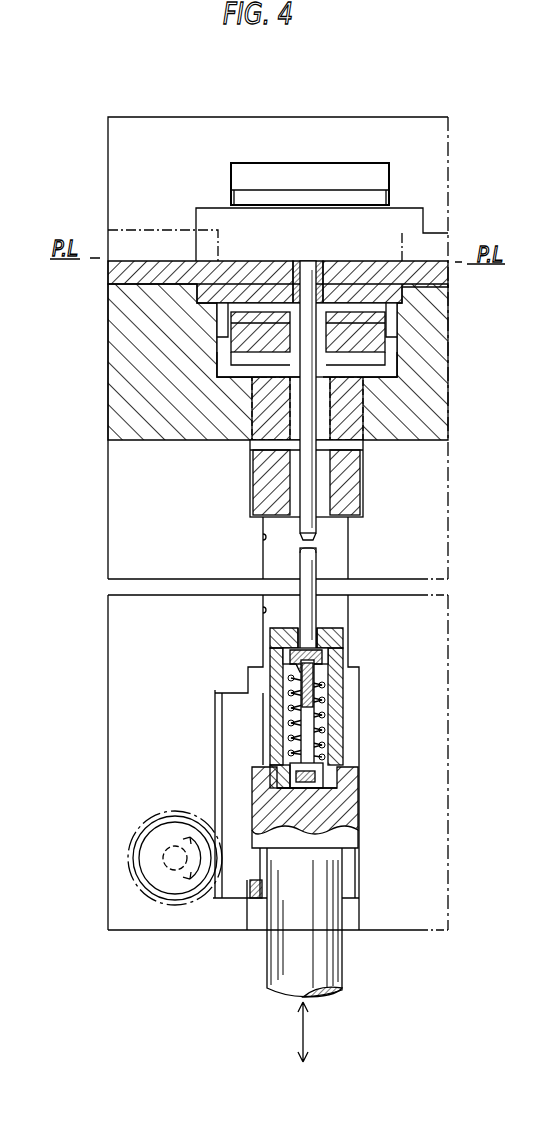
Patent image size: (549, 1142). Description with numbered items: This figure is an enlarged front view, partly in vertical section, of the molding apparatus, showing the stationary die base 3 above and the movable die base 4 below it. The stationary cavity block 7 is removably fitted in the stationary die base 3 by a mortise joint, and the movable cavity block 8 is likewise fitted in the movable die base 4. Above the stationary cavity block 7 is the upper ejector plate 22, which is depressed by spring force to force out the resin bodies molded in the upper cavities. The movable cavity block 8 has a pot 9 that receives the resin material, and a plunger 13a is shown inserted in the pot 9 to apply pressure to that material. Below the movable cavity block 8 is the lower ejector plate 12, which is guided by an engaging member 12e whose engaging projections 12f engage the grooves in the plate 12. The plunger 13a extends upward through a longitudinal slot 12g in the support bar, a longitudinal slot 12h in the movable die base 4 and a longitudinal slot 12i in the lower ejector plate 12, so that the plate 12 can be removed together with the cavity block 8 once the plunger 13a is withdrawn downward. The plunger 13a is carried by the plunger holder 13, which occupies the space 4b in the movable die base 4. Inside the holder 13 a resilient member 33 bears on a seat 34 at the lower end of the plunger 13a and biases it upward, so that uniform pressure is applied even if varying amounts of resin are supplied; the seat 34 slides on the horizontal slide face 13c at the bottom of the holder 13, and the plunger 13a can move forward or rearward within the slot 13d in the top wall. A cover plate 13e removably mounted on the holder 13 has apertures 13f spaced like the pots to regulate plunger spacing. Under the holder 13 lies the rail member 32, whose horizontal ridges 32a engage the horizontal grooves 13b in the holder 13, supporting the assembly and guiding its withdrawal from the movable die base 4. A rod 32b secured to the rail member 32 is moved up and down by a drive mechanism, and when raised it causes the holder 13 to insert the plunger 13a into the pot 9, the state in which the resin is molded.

The stationary die base 3 is at (104, 130).
The movable die base 4 is at (102, 489).
The space 4b is at (262, 540).
The stationary cavity block 7 is at (413, 222).
The movable cavity block 8 is at (415, 297).
The pot 9 is at (312, 272).
The lower ejector plate 12 is at (303, 304).
The engaging member 12e is at (238, 362).
The engaging projection 12f is at (250, 330).
The longitudinal slot 12g is at (322, 475).
The longitudinal slot 12h is at (322, 413).
The longitudinal slot 12i is at (328, 357).
The plunger holder 13 is at (329, 701).
The plunger 13a is at (318, 566).
The horizontal groove 13b is at (270, 775).
The horizontal slide face 13c is at (326, 775).
The slot 13d is at (294, 652).
The cover plate 13e is at (338, 641).
The aperture 13f is at (320, 632).
The upper ejector plate 22 is at (291, 180).
The rail member 32 is at (282, 811).
The horizontal ridge 32a is at (272, 786).
The rod 32b is at (270, 972).
The resilient member 33 is at (325, 718).
The seat 34 is at (326, 748).